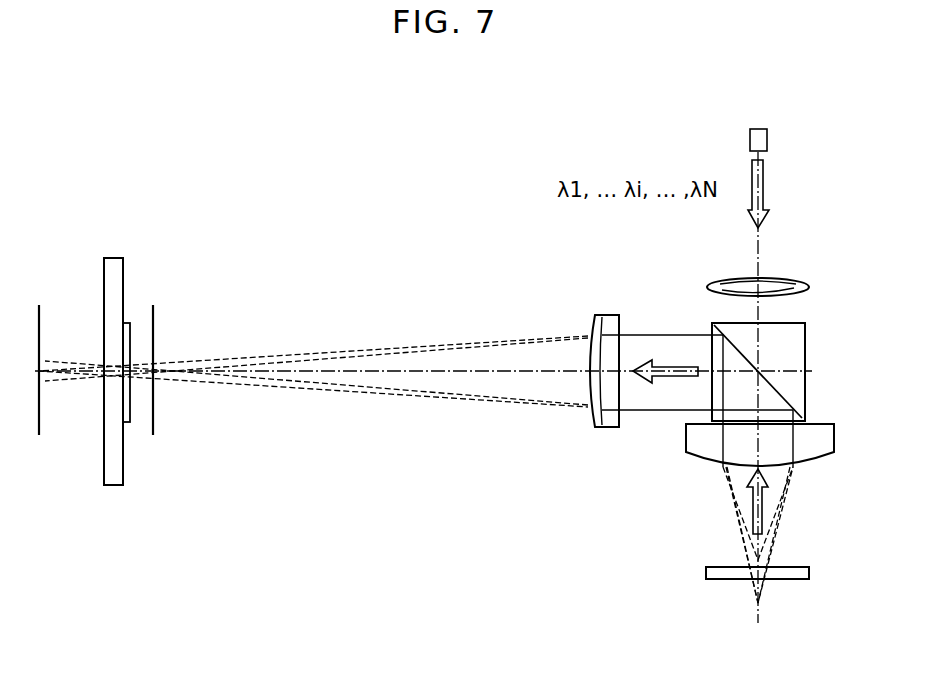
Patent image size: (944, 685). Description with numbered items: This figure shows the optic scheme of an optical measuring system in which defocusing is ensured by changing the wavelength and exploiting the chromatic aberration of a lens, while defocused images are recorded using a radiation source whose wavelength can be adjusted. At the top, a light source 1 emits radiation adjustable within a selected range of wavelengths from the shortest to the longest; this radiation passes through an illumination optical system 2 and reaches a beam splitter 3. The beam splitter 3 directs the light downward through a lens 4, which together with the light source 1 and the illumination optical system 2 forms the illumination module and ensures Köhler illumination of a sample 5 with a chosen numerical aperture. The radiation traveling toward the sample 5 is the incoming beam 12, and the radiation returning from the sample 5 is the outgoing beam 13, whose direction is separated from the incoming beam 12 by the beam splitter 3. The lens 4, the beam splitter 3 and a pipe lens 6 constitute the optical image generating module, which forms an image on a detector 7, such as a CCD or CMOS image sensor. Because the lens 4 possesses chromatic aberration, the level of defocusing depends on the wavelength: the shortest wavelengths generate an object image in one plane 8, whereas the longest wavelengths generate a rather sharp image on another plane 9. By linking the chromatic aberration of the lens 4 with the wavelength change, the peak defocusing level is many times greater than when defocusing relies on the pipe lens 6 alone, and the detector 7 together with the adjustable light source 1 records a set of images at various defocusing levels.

The light source 1 is at (767, 140).
The illumination optical system 2 is at (809, 287).
The beam splitter 3 is at (805, 347).
The lens 4 is at (812, 455).
The sample 5 is at (809, 573).
The pipe lens 6 is at (608, 315).
The detector 7 is at (123, 469).
The plane 8 is at (40, 318).
The plane 9 is at (154, 318).
The incoming beam 12 is at (752, 512).
The outgoing beam 13 is at (677, 365).